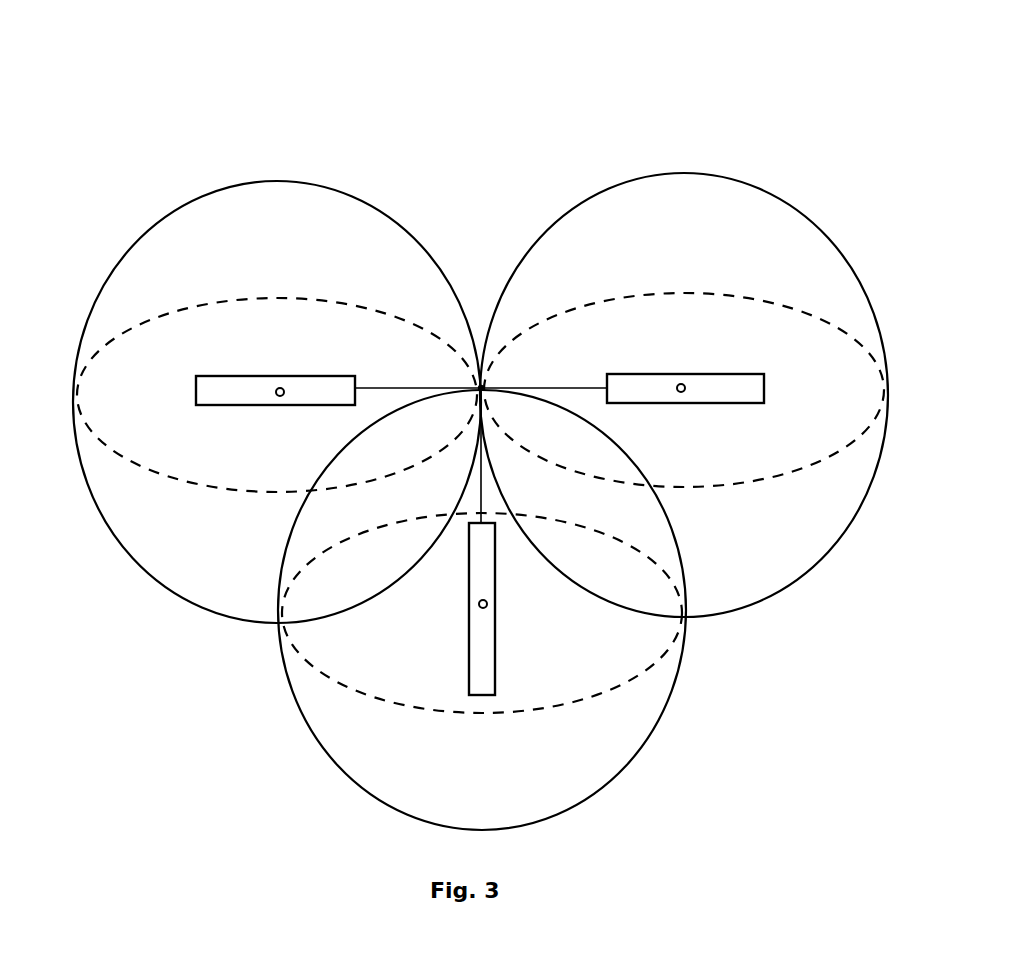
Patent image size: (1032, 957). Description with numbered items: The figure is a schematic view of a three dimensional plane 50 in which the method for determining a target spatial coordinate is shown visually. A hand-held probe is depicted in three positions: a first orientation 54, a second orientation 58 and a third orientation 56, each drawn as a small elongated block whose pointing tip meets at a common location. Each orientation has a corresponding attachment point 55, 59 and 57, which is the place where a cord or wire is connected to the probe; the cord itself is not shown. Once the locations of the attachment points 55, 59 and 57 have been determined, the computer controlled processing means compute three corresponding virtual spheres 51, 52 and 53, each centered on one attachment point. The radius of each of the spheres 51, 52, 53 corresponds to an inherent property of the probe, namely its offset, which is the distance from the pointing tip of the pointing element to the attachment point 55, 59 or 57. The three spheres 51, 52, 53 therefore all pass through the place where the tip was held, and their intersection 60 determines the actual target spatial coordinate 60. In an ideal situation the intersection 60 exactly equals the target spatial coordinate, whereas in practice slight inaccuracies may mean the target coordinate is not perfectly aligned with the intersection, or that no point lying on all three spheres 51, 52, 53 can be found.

The three dimensional plane 50 is at (750, 73).
The first sphere 51 is at (288, 181).
The second sphere 52 is at (798, 212).
The third sphere 53 is at (663, 722).
The first orientation of the hand-held probe 54 is at (218, 390).
The attachment point 55 is at (277, 389).
The third orientation of the hand-held probe 56 is at (483, 645).
The attachment point 57 is at (479, 606).
The second orientation of the hand-held probe 58 is at (735, 392).
The attachment point 59 is at (683, 392).
The intersection 60 is at (481, 386).